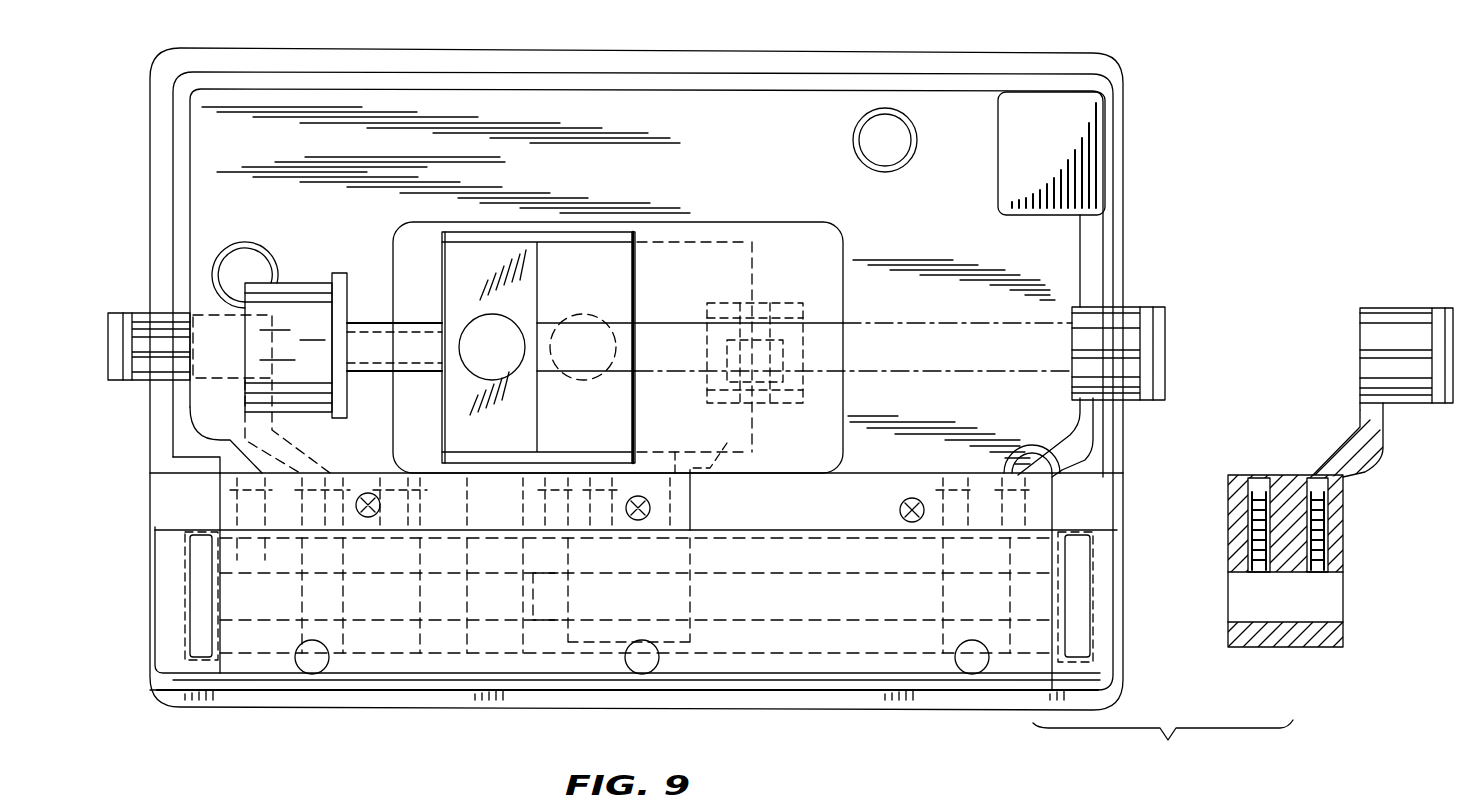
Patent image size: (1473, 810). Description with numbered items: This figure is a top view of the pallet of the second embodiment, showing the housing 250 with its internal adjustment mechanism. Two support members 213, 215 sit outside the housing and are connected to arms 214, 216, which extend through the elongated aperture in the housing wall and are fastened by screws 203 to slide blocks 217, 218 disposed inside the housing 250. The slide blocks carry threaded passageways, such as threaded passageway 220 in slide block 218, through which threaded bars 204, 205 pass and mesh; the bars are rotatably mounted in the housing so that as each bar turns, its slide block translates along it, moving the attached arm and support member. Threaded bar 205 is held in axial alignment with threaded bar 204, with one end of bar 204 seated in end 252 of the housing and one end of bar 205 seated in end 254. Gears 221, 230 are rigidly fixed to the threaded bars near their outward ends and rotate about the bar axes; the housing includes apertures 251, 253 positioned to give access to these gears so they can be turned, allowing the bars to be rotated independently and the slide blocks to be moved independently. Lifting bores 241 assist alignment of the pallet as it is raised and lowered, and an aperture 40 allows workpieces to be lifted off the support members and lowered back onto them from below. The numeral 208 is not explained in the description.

The aperture 40 is at (400, 243).
The screws 203 is at (542, 516).
The threaded bar 204 is at (413, 647).
The threaded bar 205 is at (793, 613).
The circuit board 208 is at (478, 653).
The support member 213 is at (108, 378).
The arm 214 is at (180, 432).
The support member 215 is at (1163, 312).
The arm 216 is at (1090, 448).
The slide block 217 is at (257, 633).
The slide block 218 is at (1003, 652).
The threaded passageway 220 is at (1320, 622).
The gear 221 is at (203, 657).
The gear 230 is at (1120, 700).
The lifting bores 241 is at (880, 142).
The housing 250 is at (878, 667).
The aperture 251 is at (200, 623).
The end of housing 252 is at (167, 657).
The aperture 253 is at (1075, 560).
The end of housing 254 is at (1102, 648).